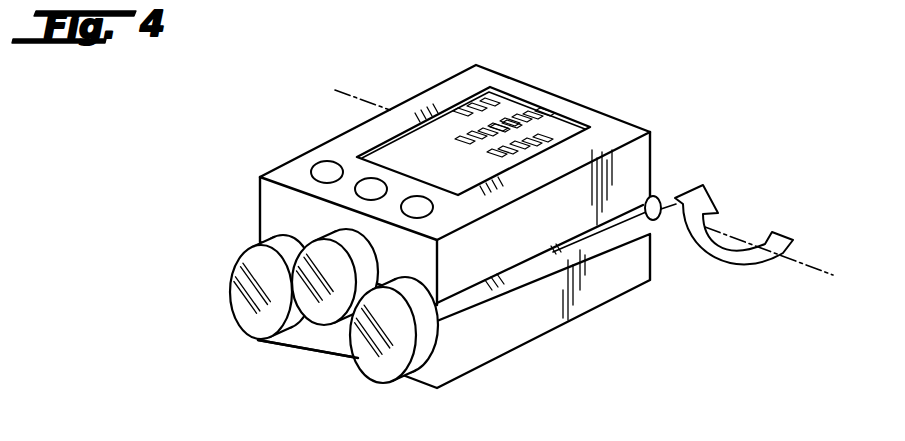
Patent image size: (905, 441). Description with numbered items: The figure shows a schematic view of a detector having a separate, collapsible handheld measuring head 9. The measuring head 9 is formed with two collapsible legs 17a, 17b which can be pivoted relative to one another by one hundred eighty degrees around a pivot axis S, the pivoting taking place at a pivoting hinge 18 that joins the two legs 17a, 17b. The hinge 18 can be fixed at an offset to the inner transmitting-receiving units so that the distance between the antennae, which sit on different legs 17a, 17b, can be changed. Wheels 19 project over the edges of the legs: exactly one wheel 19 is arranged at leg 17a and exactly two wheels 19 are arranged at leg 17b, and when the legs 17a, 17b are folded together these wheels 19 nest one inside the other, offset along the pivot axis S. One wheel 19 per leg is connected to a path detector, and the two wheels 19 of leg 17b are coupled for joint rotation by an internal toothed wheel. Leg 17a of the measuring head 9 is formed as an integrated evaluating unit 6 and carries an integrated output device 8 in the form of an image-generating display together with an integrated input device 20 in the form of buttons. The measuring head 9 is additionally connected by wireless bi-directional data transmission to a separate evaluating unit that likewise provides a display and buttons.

The handheld measuring head 9 is at (262, 140).
The evaluating unit 6 is at (284, 219).
The output device 8 is at (421, 164).
The input device 20 is at (418, 208).
The pivoting hinge 18 is at (658, 197).
The leg 17a is at (488, 267).
The leg 17b is at (487, 357).
The wheel 19 is at (318, 312).
The pivot axis S is at (733, 236).